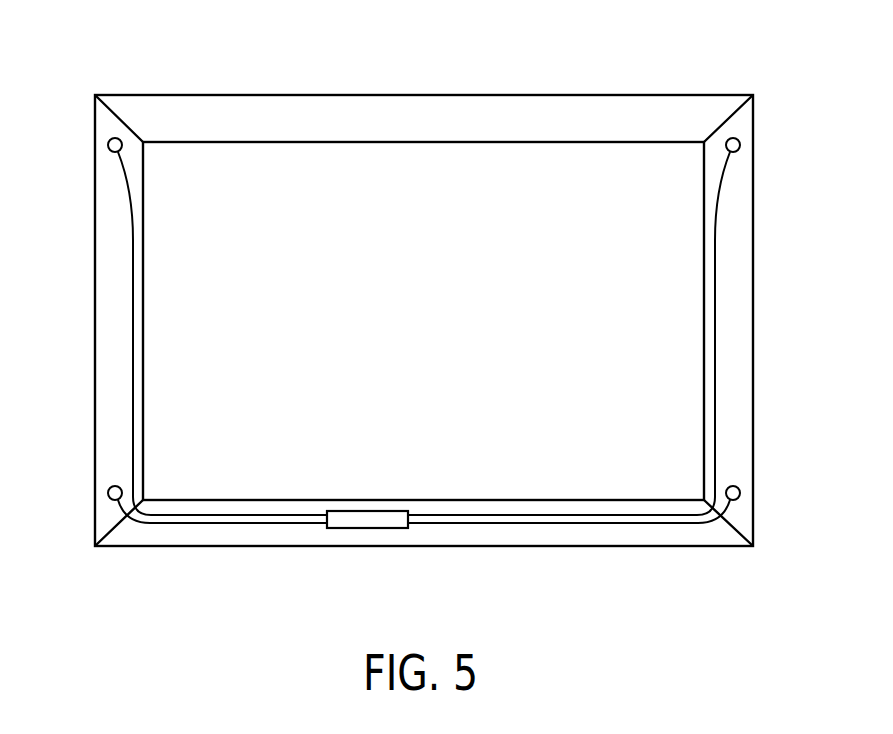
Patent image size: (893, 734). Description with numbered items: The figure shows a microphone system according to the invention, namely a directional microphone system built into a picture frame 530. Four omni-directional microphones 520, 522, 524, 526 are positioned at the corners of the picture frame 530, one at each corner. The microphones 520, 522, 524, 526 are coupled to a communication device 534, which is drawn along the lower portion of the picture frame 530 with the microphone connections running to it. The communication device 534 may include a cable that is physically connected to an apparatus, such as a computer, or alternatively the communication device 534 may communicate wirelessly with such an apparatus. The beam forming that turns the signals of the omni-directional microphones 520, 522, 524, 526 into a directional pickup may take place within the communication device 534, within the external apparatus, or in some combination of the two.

The picture frame 530 is at (393, 95).
The omni-directional microphone 520 is at (108, 146).
The omni-directional microphone 522 is at (740, 146).
The omni-directional microphone 524 is at (108, 494).
The omni-directional microphone 526 is at (740, 494).
The communication device 534 is at (368, 529).